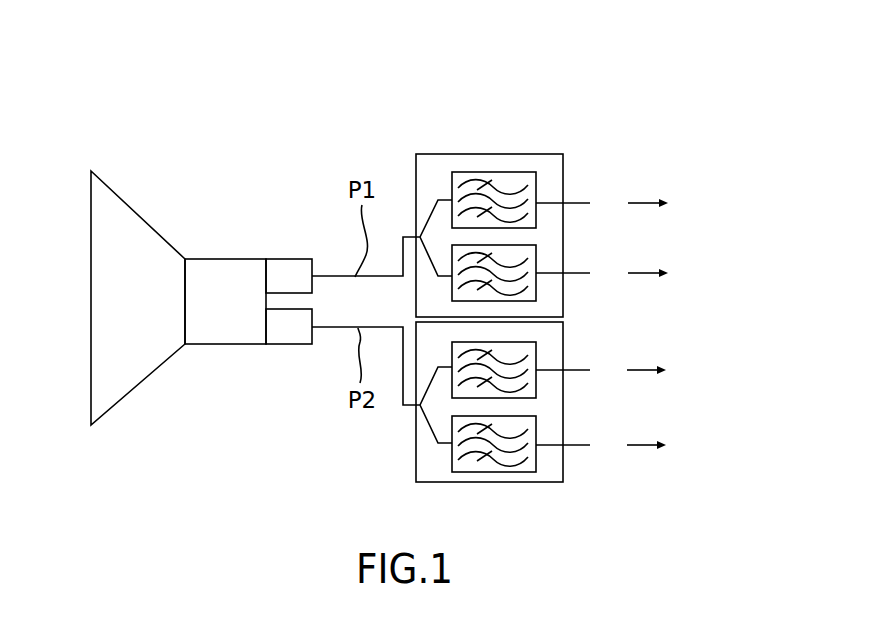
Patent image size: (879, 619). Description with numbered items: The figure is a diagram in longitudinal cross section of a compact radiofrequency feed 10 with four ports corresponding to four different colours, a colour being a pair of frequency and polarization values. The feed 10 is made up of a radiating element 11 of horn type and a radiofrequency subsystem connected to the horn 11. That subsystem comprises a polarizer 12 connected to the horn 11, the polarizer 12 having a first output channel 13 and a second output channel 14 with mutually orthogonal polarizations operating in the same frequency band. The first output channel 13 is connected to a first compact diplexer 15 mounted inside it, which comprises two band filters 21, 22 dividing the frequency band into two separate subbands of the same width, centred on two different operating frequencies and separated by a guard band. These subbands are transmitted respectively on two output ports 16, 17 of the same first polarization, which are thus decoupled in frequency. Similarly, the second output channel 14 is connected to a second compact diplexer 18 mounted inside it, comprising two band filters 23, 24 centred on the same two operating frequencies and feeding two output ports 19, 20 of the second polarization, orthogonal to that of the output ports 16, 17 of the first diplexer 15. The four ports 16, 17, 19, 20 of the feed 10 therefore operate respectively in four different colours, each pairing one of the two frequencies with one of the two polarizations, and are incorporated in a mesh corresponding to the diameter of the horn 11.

The feed 10 is at (303, 110).
The radiating element 11 is at (123, 222).
The polarizer 12 is at (213, 273).
The first output channel 13 is at (287, 272).
The second output channel 14 is at (287, 338).
The first compact diplexer 15 is at (489, 164).
The output port 16 is at (646, 203).
The output port 17 is at (646, 273).
The second compact diplexer 18 is at (545, 471).
The output port 19 is at (645, 370).
The output port 20 is at (645, 445).
The band filter 21 is at (513, 182).
The band filter 22 is at (513, 255).
The band filter 23 is at (522, 349).
The band filter 24 is at (464, 465).